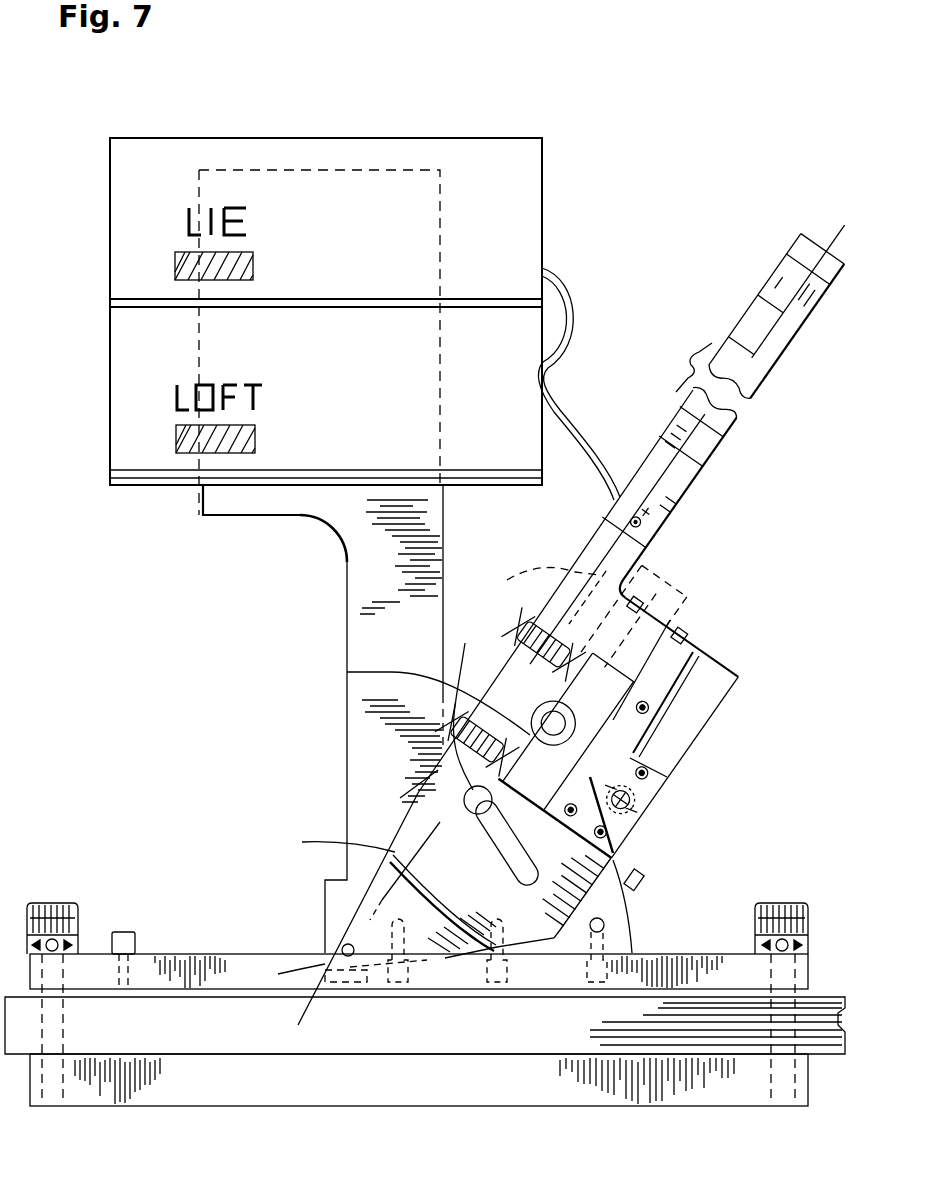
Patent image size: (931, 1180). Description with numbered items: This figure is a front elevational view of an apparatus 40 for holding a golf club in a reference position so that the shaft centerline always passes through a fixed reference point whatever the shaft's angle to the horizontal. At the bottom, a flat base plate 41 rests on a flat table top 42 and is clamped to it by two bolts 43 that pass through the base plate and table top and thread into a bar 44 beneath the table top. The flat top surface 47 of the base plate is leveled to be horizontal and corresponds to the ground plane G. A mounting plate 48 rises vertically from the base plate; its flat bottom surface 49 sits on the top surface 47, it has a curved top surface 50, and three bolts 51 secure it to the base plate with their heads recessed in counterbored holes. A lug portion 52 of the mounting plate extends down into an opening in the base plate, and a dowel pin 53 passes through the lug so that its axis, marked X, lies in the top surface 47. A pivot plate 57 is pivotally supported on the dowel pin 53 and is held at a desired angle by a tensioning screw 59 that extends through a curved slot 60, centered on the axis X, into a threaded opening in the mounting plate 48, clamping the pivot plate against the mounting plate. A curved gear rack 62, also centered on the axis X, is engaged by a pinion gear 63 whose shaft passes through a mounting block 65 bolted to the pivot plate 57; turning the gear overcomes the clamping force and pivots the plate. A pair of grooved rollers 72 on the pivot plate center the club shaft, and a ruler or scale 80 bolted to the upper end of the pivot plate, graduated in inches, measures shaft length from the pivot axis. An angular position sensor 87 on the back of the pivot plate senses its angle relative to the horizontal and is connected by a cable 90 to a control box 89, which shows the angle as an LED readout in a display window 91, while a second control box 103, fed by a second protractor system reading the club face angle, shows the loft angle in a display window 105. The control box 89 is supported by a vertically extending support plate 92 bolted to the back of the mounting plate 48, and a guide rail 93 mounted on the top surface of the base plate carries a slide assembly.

The apparatus 40 is at (499, 128).
The control box 89 is at (522, 190).
The control box 103 is at (120, 402).
The display window 91 is at (254, 264).
The display window 105 is at (256, 441).
The cable 90 is at (573, 307).
The support plate 92 is at (350, 537).
The mounting plate 48 is at (360, 738).
The curved top surface 50 is at (392, 672).
The ruler or scale 80 is at (673, 492).
The pivot plate 57 is at (408, 823).
The angular position sensor 87 is at (512, 580).
The mounting block 65 is at (650, 787).
The pinion gear 63 is at (638, 810).
The grooved rollers 72 is at (533, 670).
The tensioning screw 59 is at (472, 805).
The curved slot 60 is at (516, 856).
The curved gear rack 62 is at (638, 888).
The flat top surface 47 is at (242, 953).
The base plate 41 is at (192, 958).
The table top 42 is at (243, 1040).
The bar 44 is at (597, 1092).
The bolts 43 is at (55, 900).
The guide rail 93 is at (124, 930).
The dowel pin 53 is at (343, 946).
The lug portion 52 is at (369, 1005).
The bolts 51 is at (420, 992).
The flat bottom surface 49 is at (535, 995).
The ground plane G is at (665, 954).